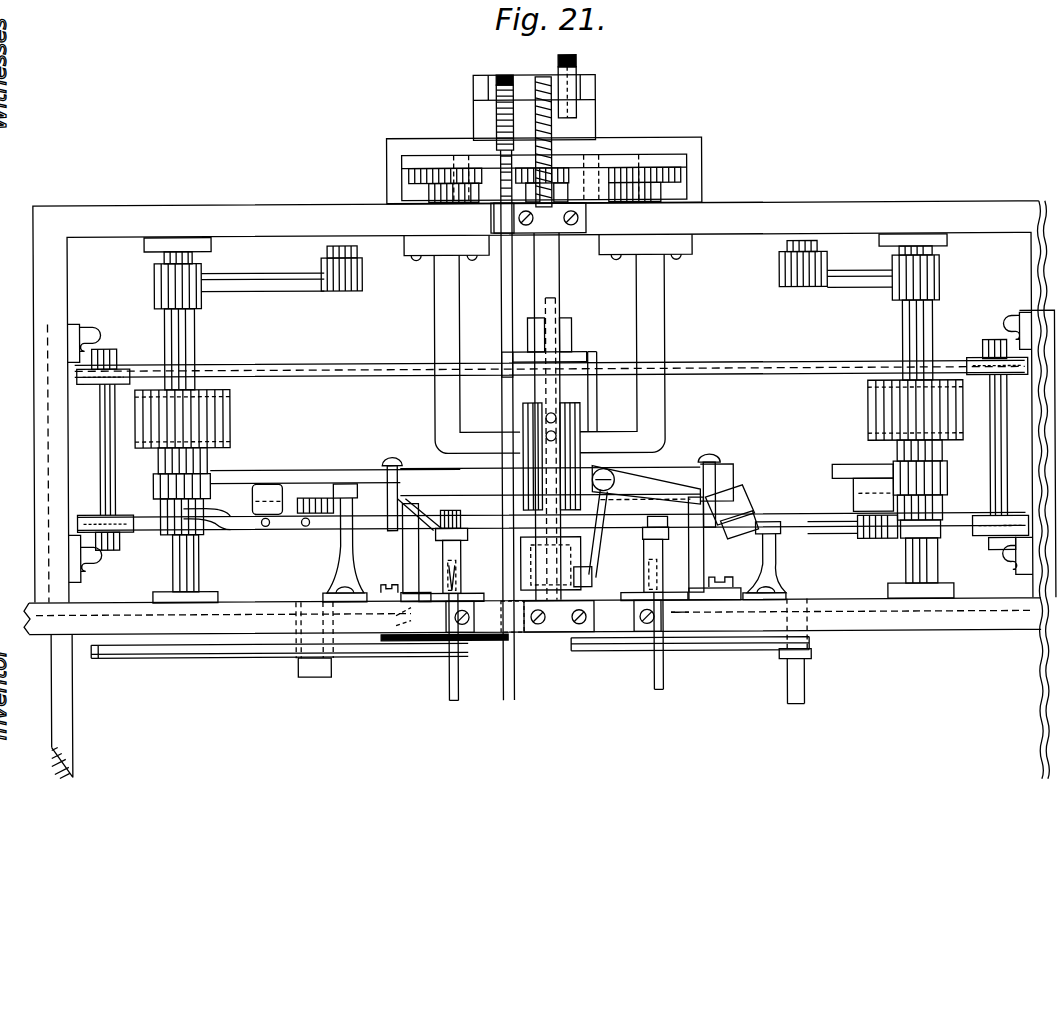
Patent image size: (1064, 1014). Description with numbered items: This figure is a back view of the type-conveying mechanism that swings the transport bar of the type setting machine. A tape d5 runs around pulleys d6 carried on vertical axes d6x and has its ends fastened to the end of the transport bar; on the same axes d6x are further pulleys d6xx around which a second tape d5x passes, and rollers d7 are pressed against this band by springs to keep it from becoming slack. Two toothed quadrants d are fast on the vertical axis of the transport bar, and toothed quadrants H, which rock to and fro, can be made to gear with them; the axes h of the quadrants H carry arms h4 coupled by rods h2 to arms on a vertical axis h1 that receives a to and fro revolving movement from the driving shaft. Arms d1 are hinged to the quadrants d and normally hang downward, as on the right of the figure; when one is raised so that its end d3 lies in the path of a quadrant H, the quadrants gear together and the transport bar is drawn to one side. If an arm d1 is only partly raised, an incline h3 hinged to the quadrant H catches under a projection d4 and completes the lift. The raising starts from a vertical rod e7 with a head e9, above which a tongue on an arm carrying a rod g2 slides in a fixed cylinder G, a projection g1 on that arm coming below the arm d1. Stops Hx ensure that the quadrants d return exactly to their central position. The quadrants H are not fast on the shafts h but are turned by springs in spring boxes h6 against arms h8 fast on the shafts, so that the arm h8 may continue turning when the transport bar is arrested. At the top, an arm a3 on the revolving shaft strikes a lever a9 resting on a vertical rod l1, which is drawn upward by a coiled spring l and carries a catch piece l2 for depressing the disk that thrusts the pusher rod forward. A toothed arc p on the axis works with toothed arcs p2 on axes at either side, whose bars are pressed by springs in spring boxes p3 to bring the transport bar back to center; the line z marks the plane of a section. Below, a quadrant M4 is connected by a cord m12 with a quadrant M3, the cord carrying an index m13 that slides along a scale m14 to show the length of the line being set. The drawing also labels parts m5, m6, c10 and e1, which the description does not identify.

The section line z is at (385, 168).
The toothed arc p2 is at (410, 176).
The toothed arc p is at (548, 184).
The spring box p3 is at (440, 200).
The arm a3 is at (507, 76).
The lever a9 is at (575, 70).
The coiled spring l is at (553, 128).
The rod m5 is at (500, 190).
The rod lower end m6 is at (515, 695).
The vertical rod l1 is at (556, 318).
The catch piece l2 is at (560, 342).
The pin c10 is at (594, 410).
The collar e1 is at (563, 410).
The tape d5 is at (289, 368).
The vertical axis h1 is at (552, 532).
The toothed quadrant H is at (288, 476).
The toothed quadrant d is at (724, 462).
The arm h8 is at (254, 496).
The end of arm d3 is at (363, 500).
The projection d4 is at (234, 523).
The arm d1 is at (548, 497).
The projection g1 is at (447, 514).
The rod g2 is at (671, 516).
The fixed cylinder G is at (552, 555).
The head e9 is at (445, 576).
The vertical rod e7 is at (448, 700).
The incline h3 is at (562, 542).
The stop Hx is at (402, 568).
The arm h4 is at (235, 281).
The rod h2 is at (364, 268).
The axis h is at (186, 360).
The spring box h6 is at (549, 414).
The roller d7 is at (880, 532).
The pulley d6 is at (120, 366).
The vertical axis d6x is at (108, 490).
The pulley d6xx is at (120, 536).
The tape d5x is at (955, 532).
The quadrant M3 is at (198, 657).
The quadrant M4 is at (598, 654).
The cord m12 is at (378, 652).
The index m13 is at (435, 624).
The scale m14 is at (686, 624).